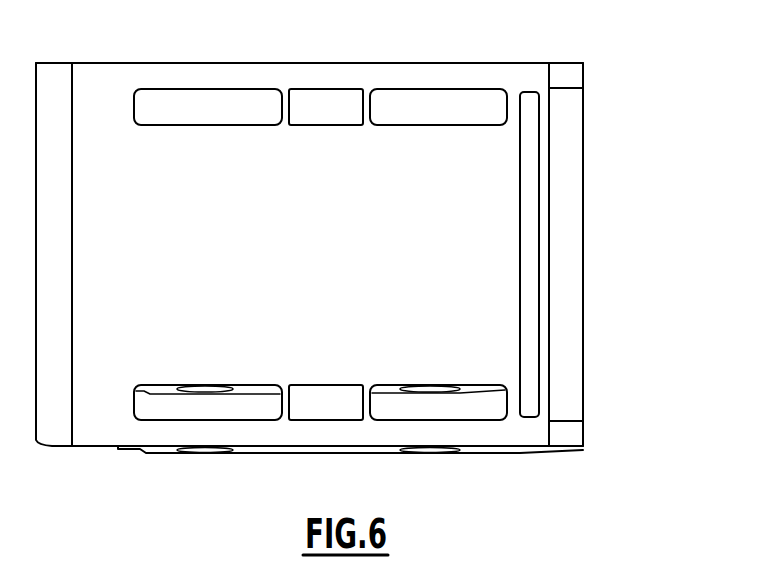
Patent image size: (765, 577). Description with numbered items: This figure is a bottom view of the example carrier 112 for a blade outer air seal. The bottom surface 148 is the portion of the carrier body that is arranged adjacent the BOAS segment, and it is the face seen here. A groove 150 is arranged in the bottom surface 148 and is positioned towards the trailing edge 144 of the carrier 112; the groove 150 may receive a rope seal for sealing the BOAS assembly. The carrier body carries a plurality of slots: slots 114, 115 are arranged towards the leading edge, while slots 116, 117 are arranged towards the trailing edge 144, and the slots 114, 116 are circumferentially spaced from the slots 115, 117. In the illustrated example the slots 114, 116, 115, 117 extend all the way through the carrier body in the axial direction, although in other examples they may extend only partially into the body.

The carrier 112 is at (631, 72).
The slot 114 is at (225, 108).
The slot 115 is at (227, 407).
The slot 116 is at (421, 108).
The slot 117 is at (423, 405).
The trailing edge 144 is at (575, 321).
The bottom surface 148 is at (125, 172).
The groove 150 is at (528, 107).